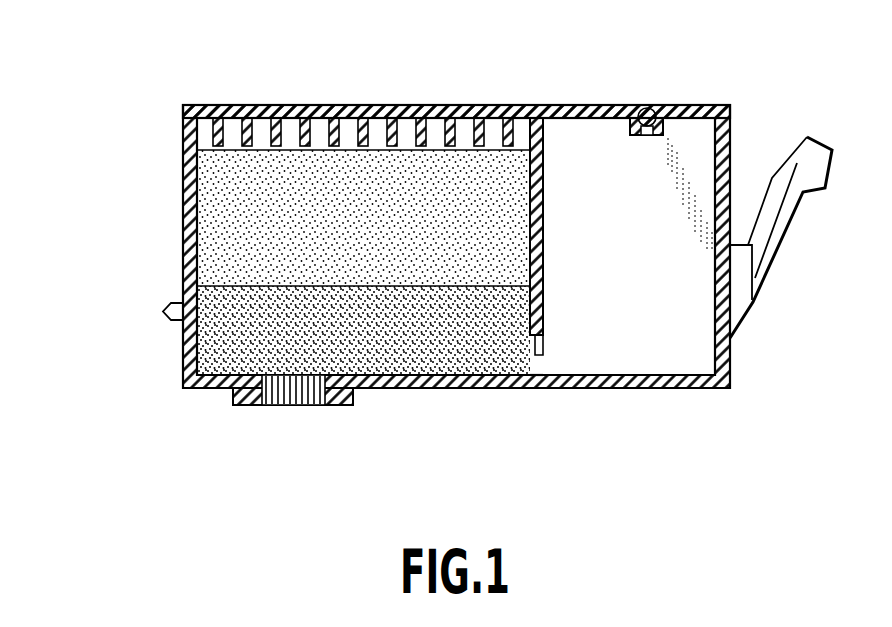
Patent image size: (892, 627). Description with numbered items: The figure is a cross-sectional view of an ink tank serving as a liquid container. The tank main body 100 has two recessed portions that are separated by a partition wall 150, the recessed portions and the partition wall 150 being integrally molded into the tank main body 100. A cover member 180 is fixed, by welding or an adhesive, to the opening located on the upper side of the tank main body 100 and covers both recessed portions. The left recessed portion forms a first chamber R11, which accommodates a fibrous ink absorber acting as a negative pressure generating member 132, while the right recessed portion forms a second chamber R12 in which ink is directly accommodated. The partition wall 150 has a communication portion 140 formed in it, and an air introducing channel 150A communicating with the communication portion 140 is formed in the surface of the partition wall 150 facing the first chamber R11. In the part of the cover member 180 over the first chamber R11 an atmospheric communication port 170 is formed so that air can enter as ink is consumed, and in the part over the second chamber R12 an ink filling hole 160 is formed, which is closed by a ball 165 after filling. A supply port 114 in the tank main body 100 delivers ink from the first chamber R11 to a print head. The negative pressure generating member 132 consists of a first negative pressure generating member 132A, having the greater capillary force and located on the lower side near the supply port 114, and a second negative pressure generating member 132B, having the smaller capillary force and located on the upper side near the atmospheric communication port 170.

The tank main body 100 is at (443, 393).
The supply port 114 is at (292, 400).
The negative pressure generating member 132 is at (276, 262).
The first negative pressure generating member 132A is at (237, 308).
The second negative pressure generating member 132B is at (258, 212).
The communication portion 140 is at (545, 362).
The partition wall 150 is at (545, 205).
The air introducing channel 150A is at (545, 320).
The ink filling hole 160 is at (633, 105).
The ball 165 is at (648, 106).
The atmospheric communication port 170 is at (327, 105).
The cover member 180 is at (458, 94).
The first chamber R11 is at (297, 308).
The second chamber R12 is at (690, 348).